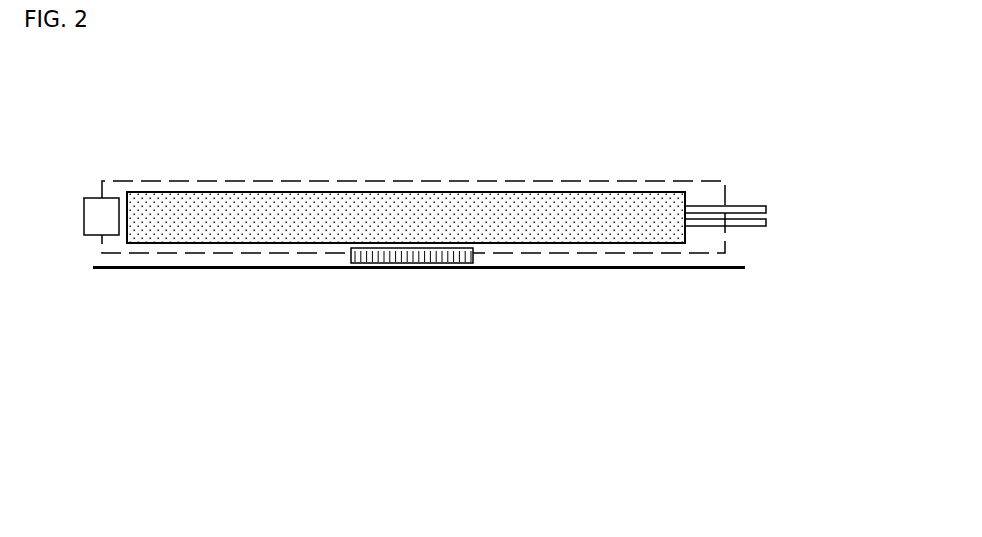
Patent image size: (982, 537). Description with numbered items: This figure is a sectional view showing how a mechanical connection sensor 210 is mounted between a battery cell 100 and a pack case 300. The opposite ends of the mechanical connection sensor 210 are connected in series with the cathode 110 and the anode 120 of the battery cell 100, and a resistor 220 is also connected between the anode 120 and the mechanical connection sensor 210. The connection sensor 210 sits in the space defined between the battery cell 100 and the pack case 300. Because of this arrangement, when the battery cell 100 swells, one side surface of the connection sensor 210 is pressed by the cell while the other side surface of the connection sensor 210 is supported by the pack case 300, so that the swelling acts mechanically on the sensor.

The battery cell 100 is at (420, 185).
The cathode 110 is at (758, 227).
The anode 120 is at (750, 204).
The mechanical connection sensor 210 is at (412, 257).
The resistor 220 is at (88, 198).
The pack case 300 is at (585, 268).